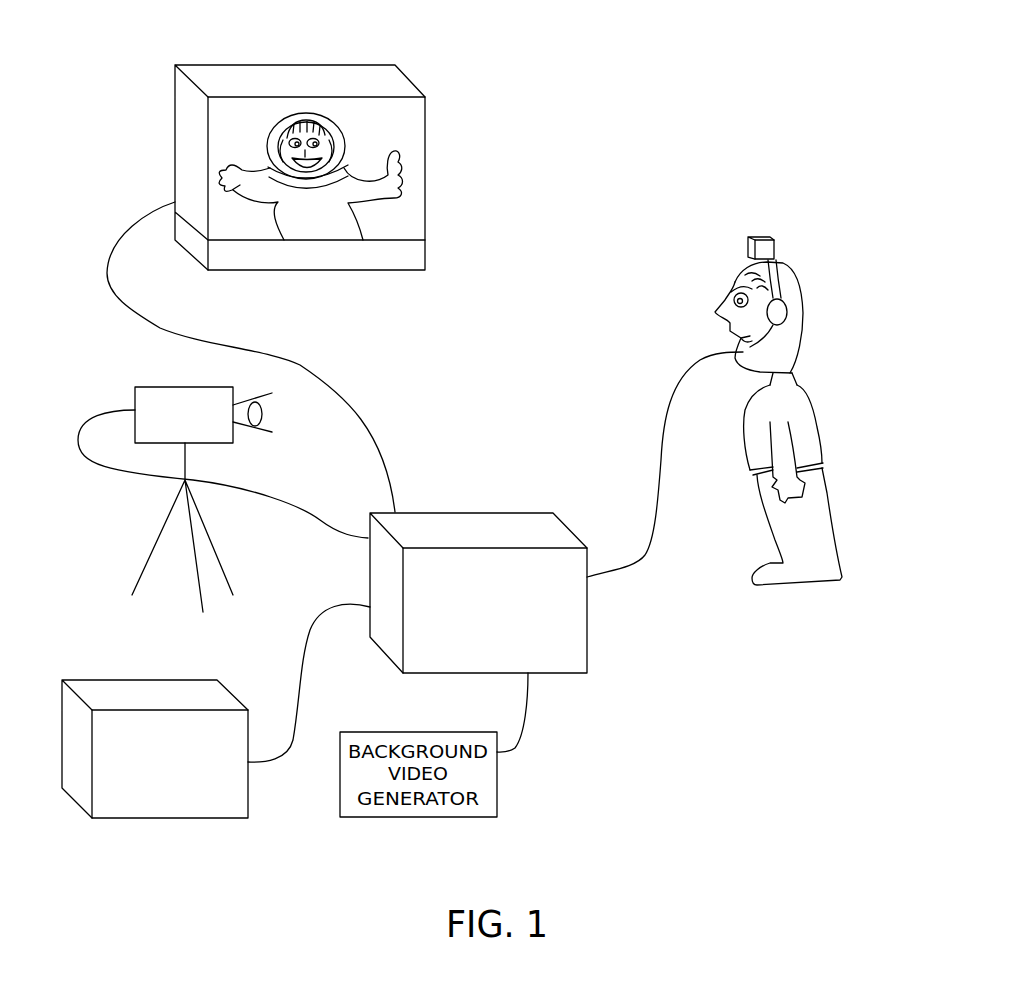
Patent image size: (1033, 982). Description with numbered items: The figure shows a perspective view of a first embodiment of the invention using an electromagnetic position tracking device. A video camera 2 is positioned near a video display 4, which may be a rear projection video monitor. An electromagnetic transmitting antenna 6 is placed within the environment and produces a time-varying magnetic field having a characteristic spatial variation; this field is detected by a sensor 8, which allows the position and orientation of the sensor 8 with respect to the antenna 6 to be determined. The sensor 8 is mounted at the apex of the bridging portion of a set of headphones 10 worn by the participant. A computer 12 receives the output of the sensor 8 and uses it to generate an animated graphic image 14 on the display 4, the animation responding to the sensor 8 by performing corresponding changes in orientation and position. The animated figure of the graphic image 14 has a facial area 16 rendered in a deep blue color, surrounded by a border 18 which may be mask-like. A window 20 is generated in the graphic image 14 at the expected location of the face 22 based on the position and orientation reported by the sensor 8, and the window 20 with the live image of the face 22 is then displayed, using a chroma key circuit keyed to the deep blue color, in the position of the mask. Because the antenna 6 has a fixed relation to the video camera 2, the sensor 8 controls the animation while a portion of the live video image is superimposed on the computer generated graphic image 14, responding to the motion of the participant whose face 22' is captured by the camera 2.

The video camera 2 is at (167, 387).
The video display 4 is at (425, 163).
The electromagnetic transmitting antenna 6 is at (110, 680).
The sensor 8 is at (753, 237).
The headphones 10 is at (780, 287).
The computer 12 is at (556, 515).
The animated graphic image 14 is at (237, 167).
The facial area 16 is at (287, 120).
The border 18 is at (345, 138).
The window 20 is at (329, 140).
The face 22 is at (387, 142).
The participant's mouth 22' is at (729, 308).